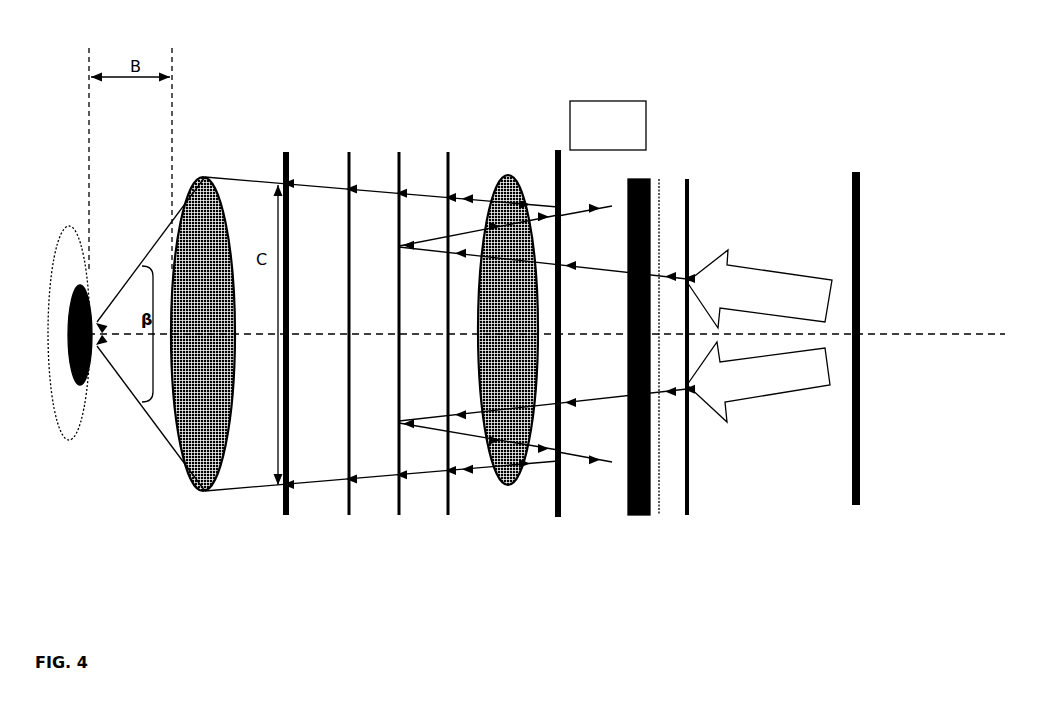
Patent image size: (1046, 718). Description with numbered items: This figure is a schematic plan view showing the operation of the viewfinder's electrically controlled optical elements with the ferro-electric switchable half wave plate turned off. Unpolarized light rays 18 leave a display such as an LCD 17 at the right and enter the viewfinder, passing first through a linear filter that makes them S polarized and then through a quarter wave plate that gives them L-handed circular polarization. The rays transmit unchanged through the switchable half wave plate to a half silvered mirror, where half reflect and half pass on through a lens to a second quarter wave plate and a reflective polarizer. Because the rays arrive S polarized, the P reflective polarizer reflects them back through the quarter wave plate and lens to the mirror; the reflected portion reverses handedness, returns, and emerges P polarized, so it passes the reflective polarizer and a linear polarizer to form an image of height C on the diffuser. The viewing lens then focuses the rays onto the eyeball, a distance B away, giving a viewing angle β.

The LCD 17 is at (849, 500).
The light rays 18 is at (792, 270).